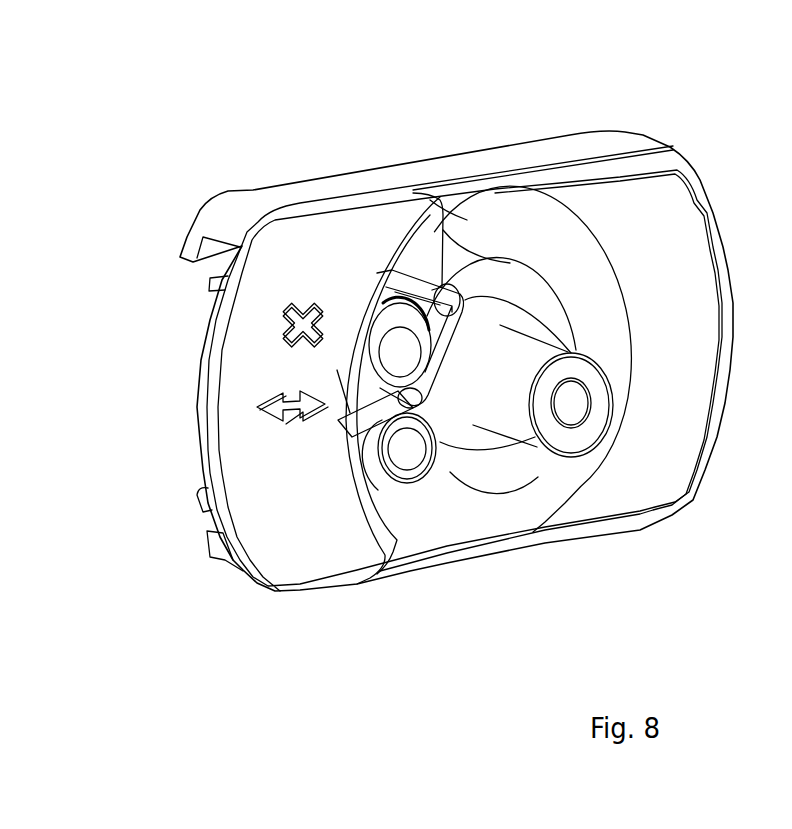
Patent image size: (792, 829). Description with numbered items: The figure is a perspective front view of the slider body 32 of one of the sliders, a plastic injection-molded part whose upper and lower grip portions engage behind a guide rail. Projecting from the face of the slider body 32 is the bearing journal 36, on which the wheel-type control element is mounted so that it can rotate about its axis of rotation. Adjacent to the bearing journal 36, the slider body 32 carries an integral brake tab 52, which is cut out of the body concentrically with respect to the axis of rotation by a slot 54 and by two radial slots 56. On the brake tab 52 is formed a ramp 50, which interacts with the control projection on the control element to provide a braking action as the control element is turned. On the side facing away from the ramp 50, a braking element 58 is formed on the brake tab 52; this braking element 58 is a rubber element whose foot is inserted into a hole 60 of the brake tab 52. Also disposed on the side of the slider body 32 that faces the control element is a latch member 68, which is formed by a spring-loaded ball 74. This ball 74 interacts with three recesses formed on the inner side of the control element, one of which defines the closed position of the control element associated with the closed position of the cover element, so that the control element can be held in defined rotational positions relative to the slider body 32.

The slider body 32 is at (707, 182).
The bearing journal 36 is at (587, 427).
The ramp 50 is at (347, 387).
The brake tab 52 is at (412, 297).
The slot 54 is at (367, 300).
The radial slots 56 is at (430, 318).
The braking element 58 is at (400, 352).
The hole 60 is at (370, 413).
The latch member 68 is at (425, 478).
The spring-loaded ball 74 is at (408, 453).